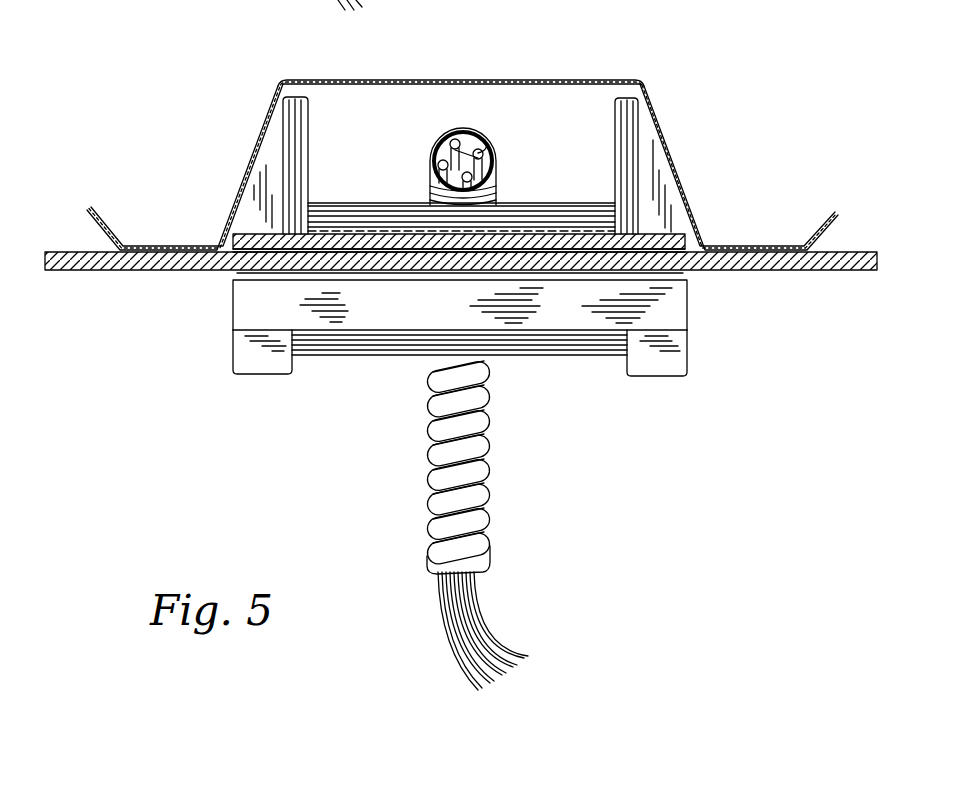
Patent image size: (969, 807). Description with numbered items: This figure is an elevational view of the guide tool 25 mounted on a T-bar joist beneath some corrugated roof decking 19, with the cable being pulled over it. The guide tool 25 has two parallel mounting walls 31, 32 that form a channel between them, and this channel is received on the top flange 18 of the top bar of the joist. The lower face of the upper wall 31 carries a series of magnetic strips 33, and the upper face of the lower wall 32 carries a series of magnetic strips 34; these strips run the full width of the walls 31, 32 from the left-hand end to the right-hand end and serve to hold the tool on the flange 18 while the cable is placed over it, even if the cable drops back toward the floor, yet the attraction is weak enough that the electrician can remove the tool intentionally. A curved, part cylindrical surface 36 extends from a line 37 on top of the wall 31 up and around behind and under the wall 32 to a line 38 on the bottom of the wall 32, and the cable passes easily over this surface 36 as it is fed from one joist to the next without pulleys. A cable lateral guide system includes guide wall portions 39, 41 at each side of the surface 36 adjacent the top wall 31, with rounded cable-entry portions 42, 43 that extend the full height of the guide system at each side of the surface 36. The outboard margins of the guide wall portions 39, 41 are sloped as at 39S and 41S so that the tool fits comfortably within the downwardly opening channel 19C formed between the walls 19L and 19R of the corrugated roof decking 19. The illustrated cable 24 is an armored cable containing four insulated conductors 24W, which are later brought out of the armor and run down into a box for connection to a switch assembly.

The top flange 18 is at (120, 268).
The corrugated roof decking 19 is at (471, 134).
The wall 19L is at (258, 143).
The wall 19R is at (657, 117).
The downwardly opening channel 19C is at (443, 100).
The armored cable 24 is at (467, 129).
The insulated conductors 24W is at (483, 143).
The guide tool 25 is at (198, 322).
The mounting wall 31 is at (538, 247).
The mounting wall 32 is at (369, 319).
The magnetic strips 33 is at (498, 253).
The magnetic strips 34 is at (433, 278).
The curved part cylindrical surface 36 is at (343, 201).
The line 37 is at (317, 232).
The line 38 is at (568, 328).
The guide wall portion 39 is at (310, 108).
The sloped outboard margin 39S is at (250, 189).
The guide wall portion 41 is at (612, 132).
The sloped outboard margin 41S is at (660, 162).
The rounded cable-entry portion 42 is at (267, 360).
The rounded cable-entry portion 43 is at (660, 363).